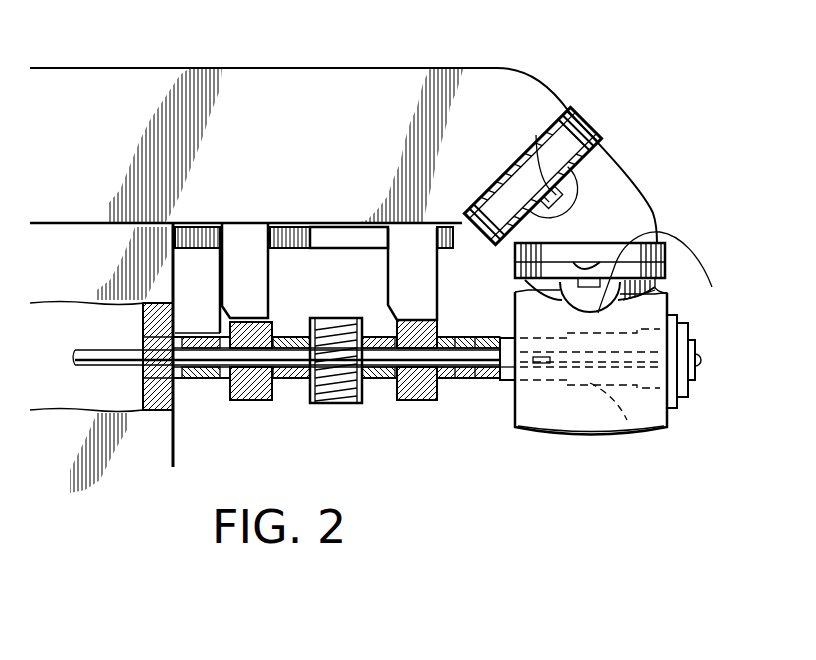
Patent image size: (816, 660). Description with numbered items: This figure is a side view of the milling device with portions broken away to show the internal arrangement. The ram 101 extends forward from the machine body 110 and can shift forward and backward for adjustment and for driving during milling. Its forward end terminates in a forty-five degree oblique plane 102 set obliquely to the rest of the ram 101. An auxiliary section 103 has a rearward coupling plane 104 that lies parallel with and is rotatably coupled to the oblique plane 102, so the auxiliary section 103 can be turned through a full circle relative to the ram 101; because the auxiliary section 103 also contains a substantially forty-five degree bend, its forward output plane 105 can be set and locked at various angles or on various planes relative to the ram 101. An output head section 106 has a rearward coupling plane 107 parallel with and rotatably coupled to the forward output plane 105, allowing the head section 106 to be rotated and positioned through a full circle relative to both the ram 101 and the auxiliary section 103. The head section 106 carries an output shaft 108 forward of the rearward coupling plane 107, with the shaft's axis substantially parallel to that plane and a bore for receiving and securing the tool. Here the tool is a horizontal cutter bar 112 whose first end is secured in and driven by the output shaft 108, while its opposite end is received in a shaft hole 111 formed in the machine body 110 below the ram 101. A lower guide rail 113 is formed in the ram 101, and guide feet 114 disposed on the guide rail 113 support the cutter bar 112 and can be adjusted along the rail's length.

The ram 101 is at (300, 103).
The 45° oblique plane 102 is at (541, 205).
The auxiliary section 103 is at (612, 208).
The rearward coupling plane 104 is at (536, 135).
The forward output plane 105 is at (623, 250).
The output head section 106 is at (545, 412).
The rearward coupling plane 107 is at (674, 272).
The output shaft 108 is at (630, 443).
The machine body 110 is at (157, 282).
The shaft hole 111 is at (157, 357).
The horizontal cutter bar 112 is at (466, 357).
The lower guide rail 113 is at (342, 238).
The guide feet 114 is at (252, 403).